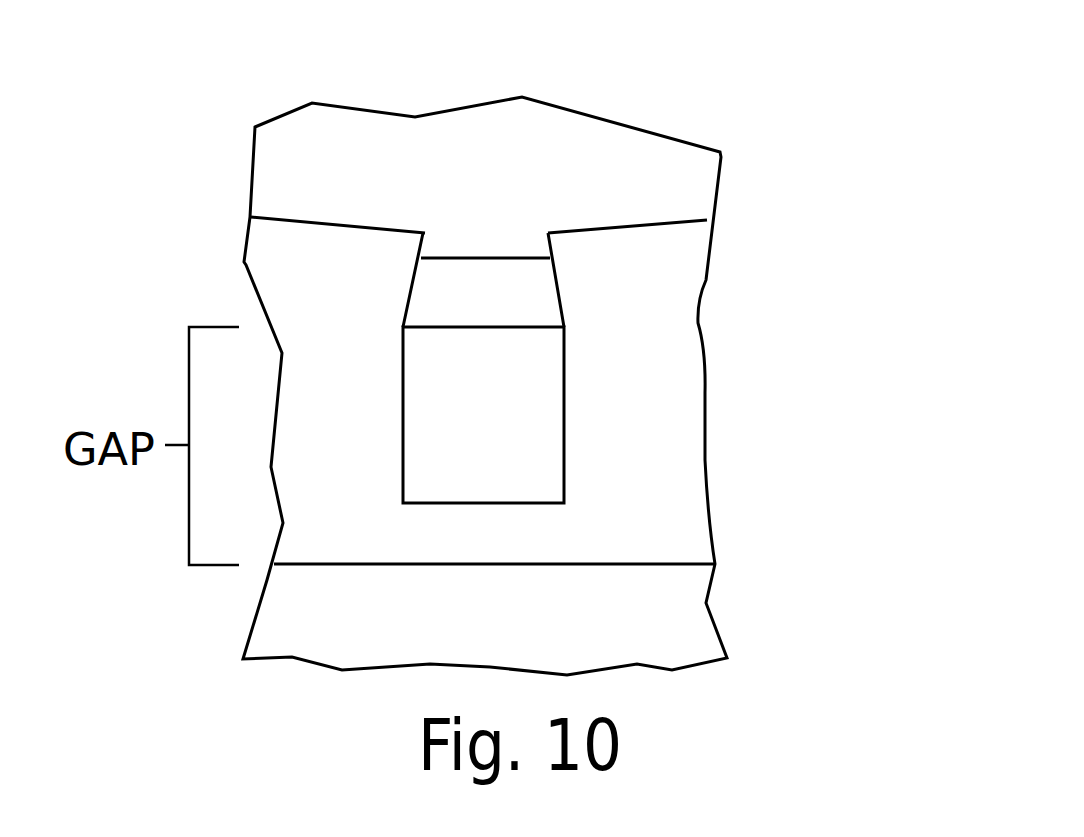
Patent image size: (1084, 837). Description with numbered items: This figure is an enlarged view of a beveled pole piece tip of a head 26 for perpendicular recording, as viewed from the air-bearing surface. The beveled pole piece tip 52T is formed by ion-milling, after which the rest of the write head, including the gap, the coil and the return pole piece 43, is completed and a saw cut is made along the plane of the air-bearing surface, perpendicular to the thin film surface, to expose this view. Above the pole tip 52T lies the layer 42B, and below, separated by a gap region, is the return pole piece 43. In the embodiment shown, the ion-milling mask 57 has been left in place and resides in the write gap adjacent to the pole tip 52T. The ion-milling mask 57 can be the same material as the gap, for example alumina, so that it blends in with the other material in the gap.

The head 26 is at (708, 63).
The second pole piece / top layer 42B is at (675, 189).
The beveled pole piece tip 52T is at (542, 295).
The ion-milling mask 57 is at (545, 433).
The return pole piece 43 is at (698, 629).